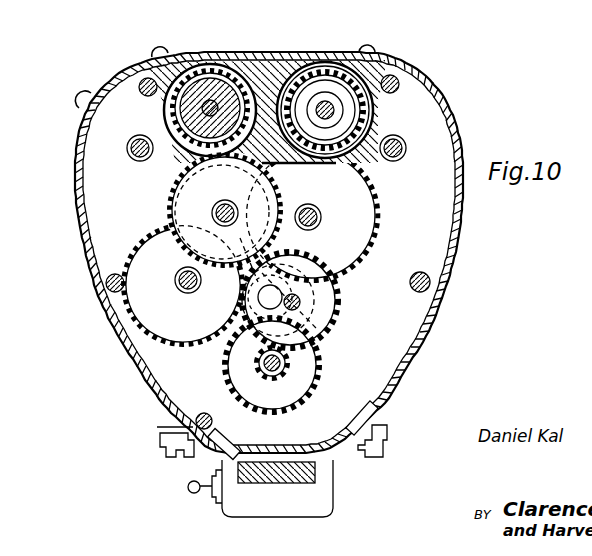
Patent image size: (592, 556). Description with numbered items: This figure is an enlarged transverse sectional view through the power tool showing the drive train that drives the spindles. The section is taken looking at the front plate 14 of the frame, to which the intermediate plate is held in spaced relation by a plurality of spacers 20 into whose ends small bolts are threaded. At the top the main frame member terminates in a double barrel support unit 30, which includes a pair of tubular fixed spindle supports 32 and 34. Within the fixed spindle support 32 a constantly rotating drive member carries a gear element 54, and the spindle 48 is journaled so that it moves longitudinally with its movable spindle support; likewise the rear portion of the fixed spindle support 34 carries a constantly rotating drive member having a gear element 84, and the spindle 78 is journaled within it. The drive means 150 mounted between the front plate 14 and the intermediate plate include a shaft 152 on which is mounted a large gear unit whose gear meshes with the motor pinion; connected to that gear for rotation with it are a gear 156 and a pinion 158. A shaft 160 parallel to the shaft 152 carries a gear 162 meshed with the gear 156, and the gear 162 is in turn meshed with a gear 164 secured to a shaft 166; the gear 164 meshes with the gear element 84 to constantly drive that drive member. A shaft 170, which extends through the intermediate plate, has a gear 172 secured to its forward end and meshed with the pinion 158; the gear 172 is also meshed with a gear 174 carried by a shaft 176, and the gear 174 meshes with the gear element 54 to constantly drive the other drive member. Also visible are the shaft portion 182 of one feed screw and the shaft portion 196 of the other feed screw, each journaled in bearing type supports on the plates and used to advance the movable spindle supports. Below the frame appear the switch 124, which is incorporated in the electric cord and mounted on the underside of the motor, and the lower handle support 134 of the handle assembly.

The front plate 14 is at (445, 160).
The spacers 20 is at (142, 78).
The double barrel support unit 30 is at (258, 58).
The fixed spindle support 32 is at (190, 64).
The fixed spindle support 34 is at (363, 147).
The spindle 48 is at (190, 110).
The gear element 54 is at (182, 84).
The spindle 78 is at (335, 110).
The gear element 84 is at (340, 89).
The switch 124 is at (288, 277).
The lower handle support 134 is at (272, 477).
The drive means 150 is at (342, 215).
The shaft 152 is at (272, 378).
The gear 156 is at (320, 388).
The pinion 158 is at (265, 345).
The shaft 160 is at (195, 287).
The gear 162 is at (183, 343).
The gear 164 is at (358, 243).
The shaft 166 is at (317, 212).
The shaft 170 is at (300, 300).
The gear 172 is at (337, 333).
The gear 174 is at (165, 197).
The shaft 176 is at (225, 204).
The shaft portion 182 is at (128, 153).
The shaft portion 196 is at (397, 138).